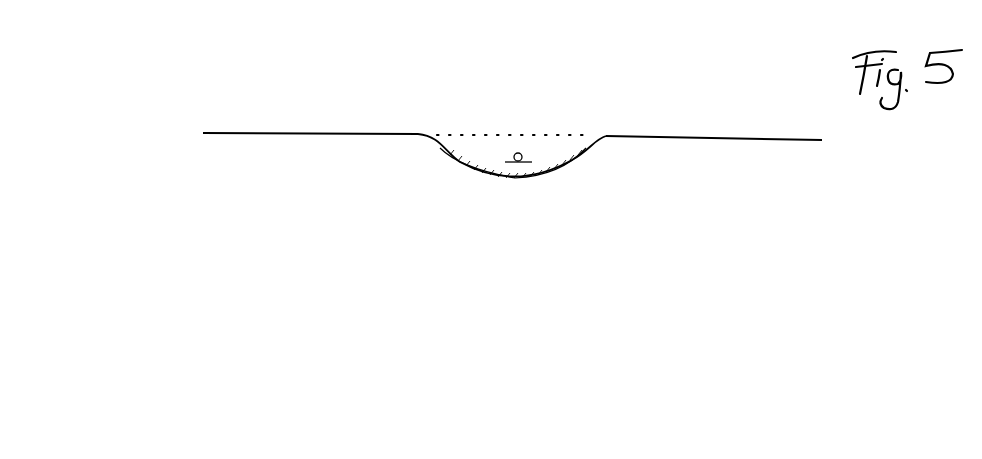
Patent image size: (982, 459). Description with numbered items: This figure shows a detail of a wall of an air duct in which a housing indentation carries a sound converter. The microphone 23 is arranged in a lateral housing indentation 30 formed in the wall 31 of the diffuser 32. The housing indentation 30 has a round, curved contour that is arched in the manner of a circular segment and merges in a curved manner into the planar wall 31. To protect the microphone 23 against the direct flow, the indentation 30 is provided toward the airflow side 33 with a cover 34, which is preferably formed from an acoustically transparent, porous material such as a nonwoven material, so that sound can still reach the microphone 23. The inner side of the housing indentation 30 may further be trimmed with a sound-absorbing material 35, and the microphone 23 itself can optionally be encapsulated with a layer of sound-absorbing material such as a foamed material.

The microphone 23 is at (513, 163).
The housing indentation 30 is at (582, 160).
The wall 31 is at (725, 138).
The diffuser 32 is at (675, 72).
The airflow side 33 is at (422, 116).
The cover 34 is at (475, 137).
The sound-absorbing material 35 is at (565, 178).